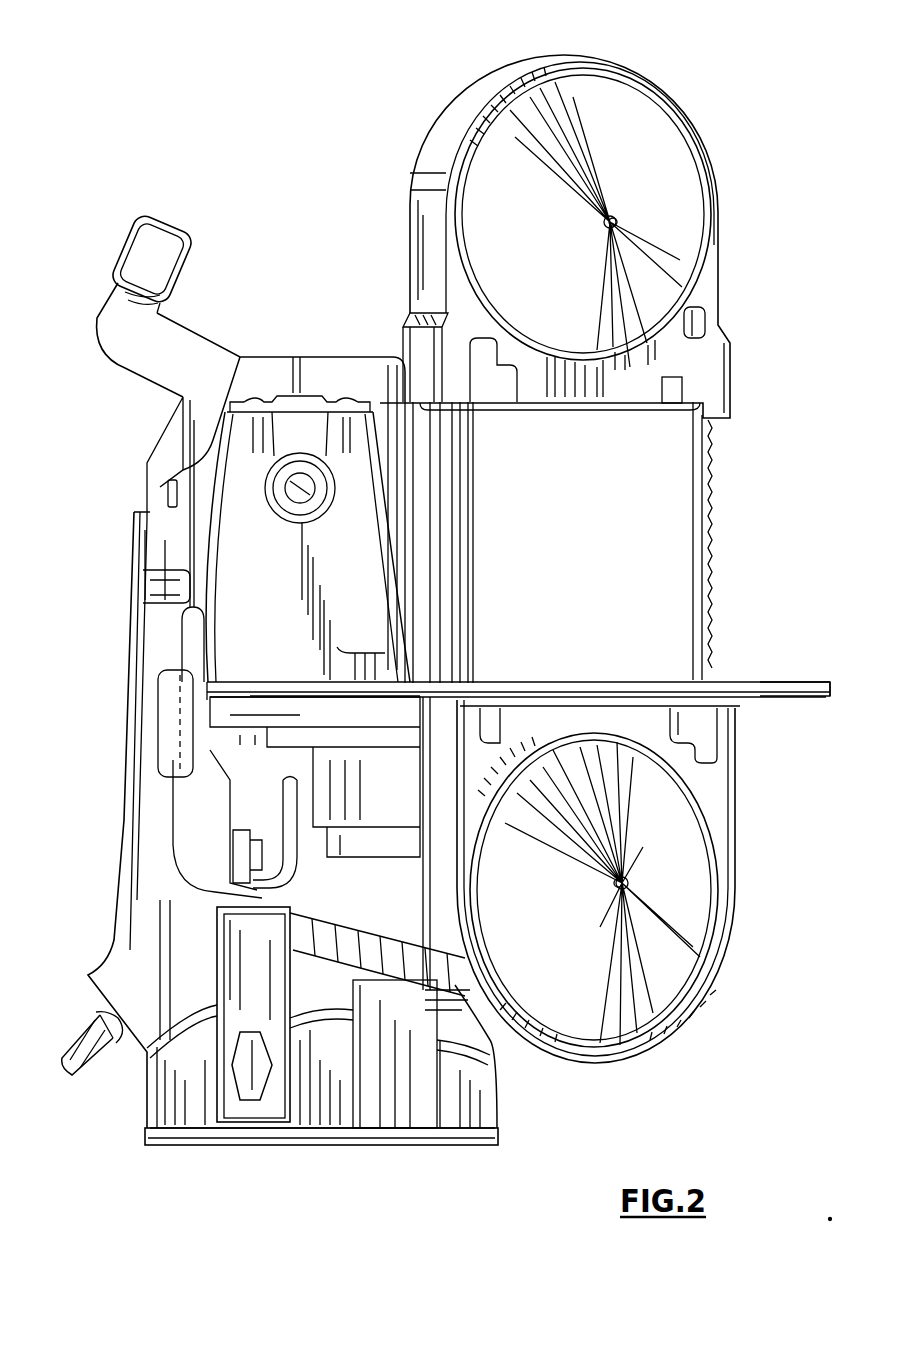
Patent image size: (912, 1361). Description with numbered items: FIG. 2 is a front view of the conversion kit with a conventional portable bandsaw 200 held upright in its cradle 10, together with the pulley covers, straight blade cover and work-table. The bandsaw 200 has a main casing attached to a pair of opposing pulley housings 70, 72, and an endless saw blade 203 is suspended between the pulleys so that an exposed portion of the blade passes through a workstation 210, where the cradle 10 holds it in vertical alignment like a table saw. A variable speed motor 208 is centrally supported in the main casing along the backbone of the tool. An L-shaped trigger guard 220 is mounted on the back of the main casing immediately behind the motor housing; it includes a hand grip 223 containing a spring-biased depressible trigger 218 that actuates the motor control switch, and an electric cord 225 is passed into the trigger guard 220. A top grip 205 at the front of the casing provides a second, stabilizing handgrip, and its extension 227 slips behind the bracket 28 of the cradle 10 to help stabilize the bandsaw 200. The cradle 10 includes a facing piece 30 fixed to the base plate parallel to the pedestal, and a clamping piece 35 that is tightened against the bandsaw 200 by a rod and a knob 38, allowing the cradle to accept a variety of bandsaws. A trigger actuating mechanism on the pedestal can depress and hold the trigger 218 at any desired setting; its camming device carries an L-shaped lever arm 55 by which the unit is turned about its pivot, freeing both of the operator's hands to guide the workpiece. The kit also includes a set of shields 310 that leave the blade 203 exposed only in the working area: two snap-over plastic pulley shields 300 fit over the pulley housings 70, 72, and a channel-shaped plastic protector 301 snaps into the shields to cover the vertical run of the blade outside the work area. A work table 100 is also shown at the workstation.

The cradle 10 is at (360, 1148).
The bracket 28 is at (222, 357).
The facing piece 30 is at (412, 1130).
The clamping piece 35 is at (225, 1120).
The knob 38 is at (255, 1100).
The L-shaped lever arm 55 is at (298, 870).
The pulley housing 70 is at (640, 70).
The pulley housing 72 is at (546, 1058).
The work table assembly 100 is at (802, 702).
The portable bandsaw 200 is at (123, 688).
The saw blade 203 is at (718, 617).
The top grip 205 is at (120, 263).
The motor 208 is at (227, 618).
The workstation 210 is at (578, 672).
The trigger 218 is at (265, 897).
The trigger guard 220 is at (337, 1028).
The hand grip 223 is at (492, 1098).
The electric cord 225 is at (90, 1030).
The extension 227 is at (150, 380).
The pulley shield 300 is at (715, 293).
The blade protector 301 is at (470, 570).
The set of shields 310 is at (408, 264).